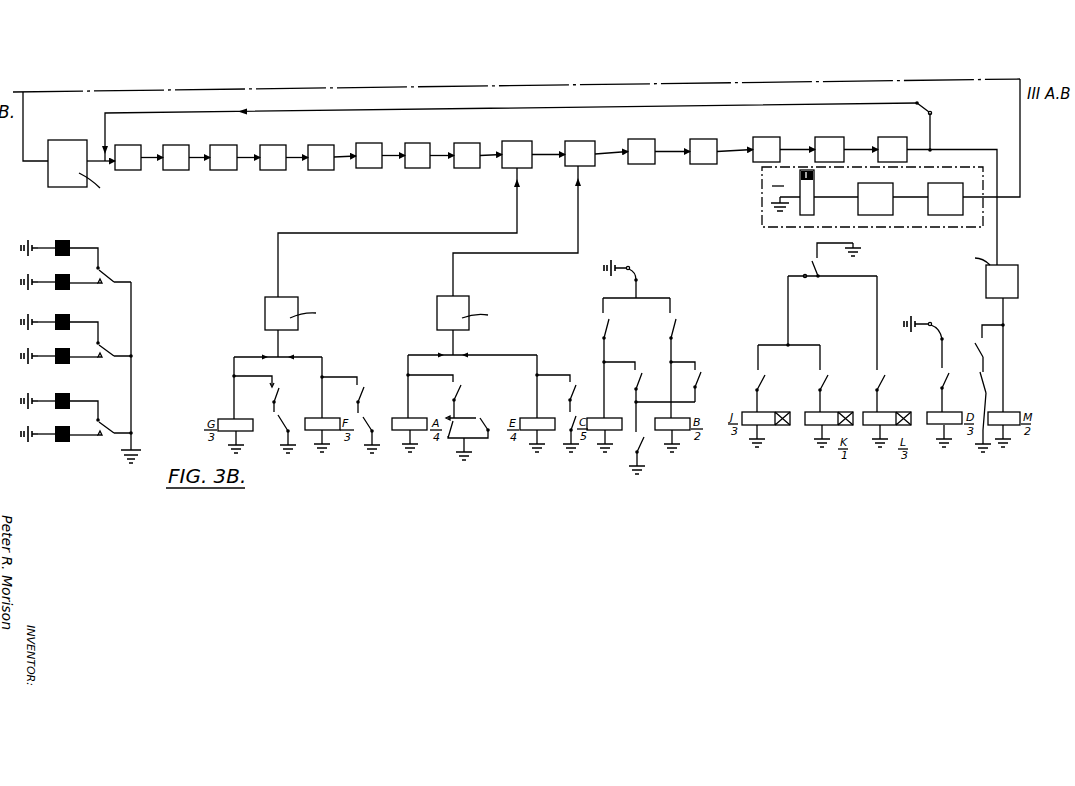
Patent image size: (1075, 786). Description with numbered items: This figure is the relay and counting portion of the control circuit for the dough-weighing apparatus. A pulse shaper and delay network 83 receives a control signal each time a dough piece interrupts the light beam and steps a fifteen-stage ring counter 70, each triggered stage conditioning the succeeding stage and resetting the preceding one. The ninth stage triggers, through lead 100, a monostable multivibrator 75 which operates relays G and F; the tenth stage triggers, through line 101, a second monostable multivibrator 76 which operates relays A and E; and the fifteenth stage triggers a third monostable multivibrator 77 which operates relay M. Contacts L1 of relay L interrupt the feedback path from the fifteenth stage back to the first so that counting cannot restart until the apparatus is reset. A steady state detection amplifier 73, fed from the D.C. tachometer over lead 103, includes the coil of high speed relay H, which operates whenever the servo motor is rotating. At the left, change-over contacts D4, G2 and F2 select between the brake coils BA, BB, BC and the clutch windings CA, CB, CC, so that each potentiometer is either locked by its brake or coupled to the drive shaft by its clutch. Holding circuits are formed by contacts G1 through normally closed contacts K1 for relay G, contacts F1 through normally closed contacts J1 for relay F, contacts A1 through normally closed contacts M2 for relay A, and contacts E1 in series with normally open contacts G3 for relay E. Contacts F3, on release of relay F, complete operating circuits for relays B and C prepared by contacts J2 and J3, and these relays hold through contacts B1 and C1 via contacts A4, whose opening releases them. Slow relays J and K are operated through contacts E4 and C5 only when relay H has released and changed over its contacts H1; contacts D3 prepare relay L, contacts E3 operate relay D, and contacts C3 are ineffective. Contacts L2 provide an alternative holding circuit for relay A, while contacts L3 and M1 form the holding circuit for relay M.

The pulse shaper and delay network 83 is at (73, 140).
The ring counter 70 is at (549, 184).
The steady state detection amplifier 73 is at (762, 210).
The monostable multivibrator 75 is at (299, 301).
The second monostable multivibrator 76 is at (470, 301).
The third monostable multivibrator 77 is at (985, 281).
The lead 100 is at (325, 233).
The line 101 is at (528, 253).
The lead 103 is at (1020, 120).
The contacts of relay L L1 is at (933, 124).
The operating coil of brake BA is at (73, 243).
The operating winding of electromagnetic clutch CA is at (72, 289).
The operating coil of brake BB is at (71, 319).
The operating winding of electromagnetic clutch CB is at (73, 363).
The operating coil of brake BC is at (72, 397).
The operating winding of electromagnetic clutch CC is at (73, 441).
The contacts of relay D D4 is at (115, 273).
The contacts of relay G G2 is at (115, 347).
The contacts of relay F F2 is at (115, 425).
The contacts of relay G G1 is at (266, 390).
The contacts of relay K K1 is at (288, 427).
The contacts of relay F F1 is at (351, 390).
The contacts of relay J J1 is at (371, 427).
The contacts of relay A A1 is at (441, 392).
The contacts of relay L L2 is at (467, 438).
The contacts of relay M M2 is at (491, 420).
The contacts of relay E E1 is at (564, 385).
The contacts of relay G G3 is at (578, 423).
The contacts of relay F F3 is at (636, 279).
The contacts of relay J J2 is at (614, 358).
The contacts of relay J J3 is at (680, 358).
The contacts of relay C C1 is at (649, 380).
The contacts of relay B B1 is at (692, 377).
The contacts of relay A A4 is at (643, 438).
The contacts of relay H H1 is at (832, 260).
The contacts of relay E E4 is at (766, 378).
The contacts of relay C C5 is at (829, 378).
The contacts of relay D D3 is at (889, 344).
The contacts of relay E E3 is at (932, 337).
The contacts of relay C C3 is at (952, 384).
The contacts of relay M M1 is at (990, 347).
The contacts of relay L L3 is at (988, 412).